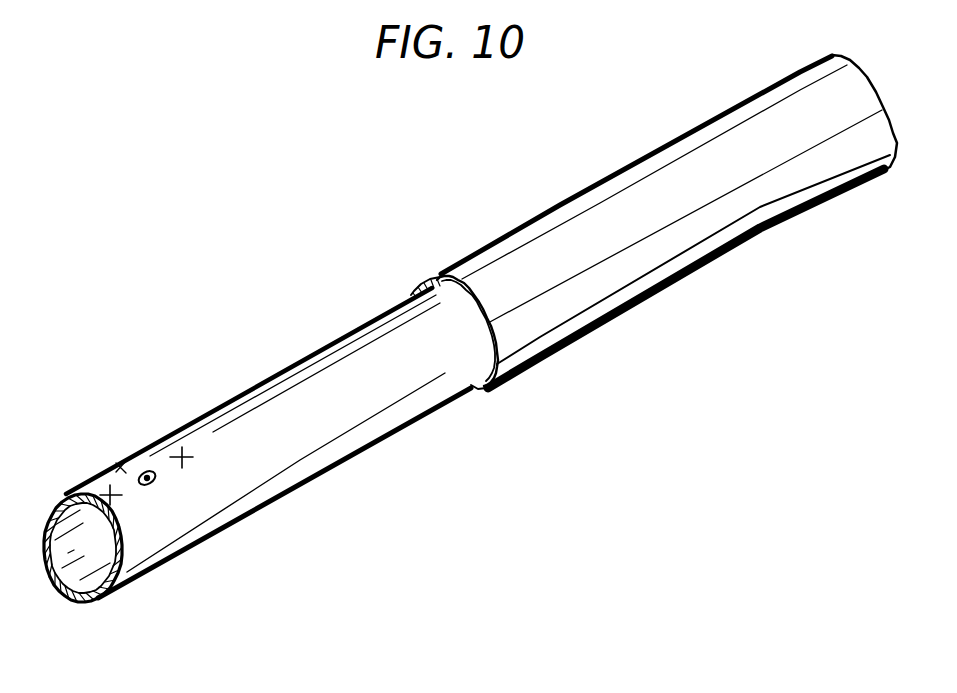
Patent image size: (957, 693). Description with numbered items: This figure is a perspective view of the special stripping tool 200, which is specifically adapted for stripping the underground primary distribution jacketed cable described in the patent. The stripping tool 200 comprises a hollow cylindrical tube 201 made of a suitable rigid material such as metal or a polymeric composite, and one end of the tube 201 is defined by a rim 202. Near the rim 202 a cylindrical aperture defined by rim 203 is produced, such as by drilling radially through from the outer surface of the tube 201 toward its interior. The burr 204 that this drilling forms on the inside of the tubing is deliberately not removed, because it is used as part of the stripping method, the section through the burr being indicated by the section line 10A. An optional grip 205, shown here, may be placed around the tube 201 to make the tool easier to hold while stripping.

The stripping tool 200 is at (289, 301).
The hollow cylindrical tube 201 is at (354, 447).
The rim 202 is at (97, 600).
The rim of cylindrical aperture 203 is at (145, 468).
The burr 204 is at (120, 469).
The grip 205 is at (487, 259).
The section line 10A- 10A is at (186, 460).